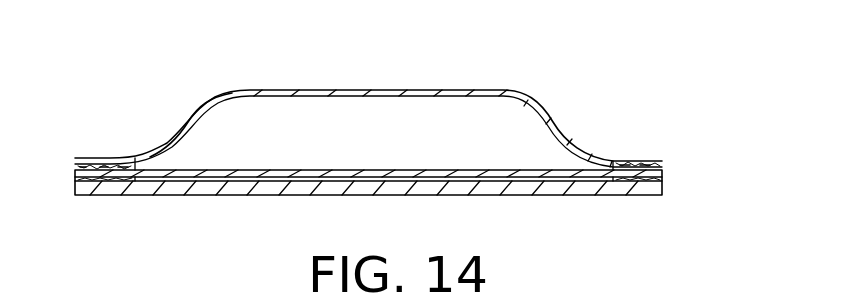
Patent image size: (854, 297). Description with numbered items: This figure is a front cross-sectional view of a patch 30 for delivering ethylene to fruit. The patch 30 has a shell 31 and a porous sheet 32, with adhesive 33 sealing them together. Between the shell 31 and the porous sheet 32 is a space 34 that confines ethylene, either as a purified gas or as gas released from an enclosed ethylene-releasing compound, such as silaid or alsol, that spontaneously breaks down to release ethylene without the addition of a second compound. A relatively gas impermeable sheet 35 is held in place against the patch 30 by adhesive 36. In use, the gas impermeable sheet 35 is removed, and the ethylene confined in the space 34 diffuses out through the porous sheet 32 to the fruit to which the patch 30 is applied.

The patch 30 is at (573, 48).
The shell 31 is at (350, 89).
The porous sheet 32 is at (465, 182).
The adhesive 33 is at (73, 161).
The space 34 is at (266, 112).
The gas impermeable sheet 35 is at (585, 196).
The adhesive 36 is at (77, 180).